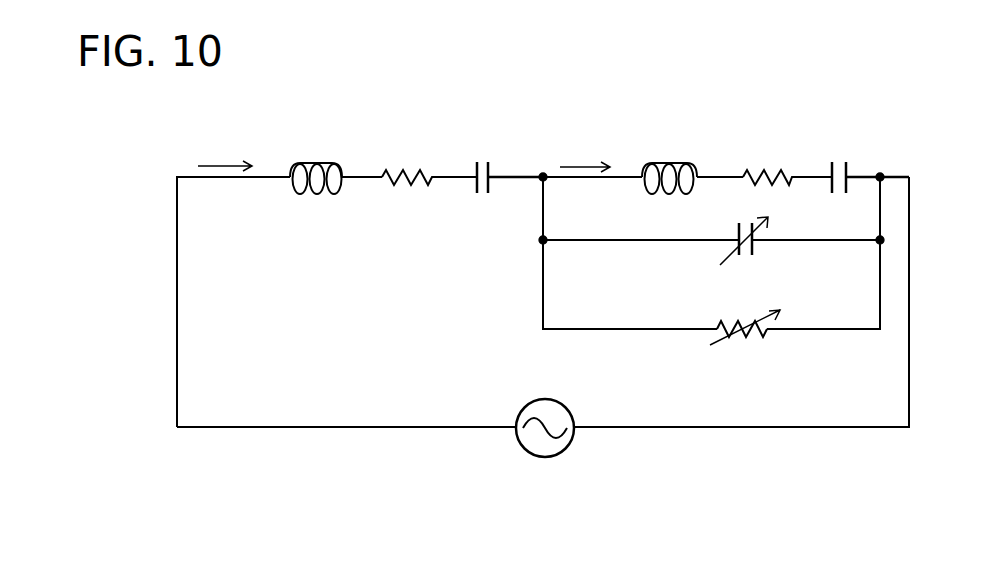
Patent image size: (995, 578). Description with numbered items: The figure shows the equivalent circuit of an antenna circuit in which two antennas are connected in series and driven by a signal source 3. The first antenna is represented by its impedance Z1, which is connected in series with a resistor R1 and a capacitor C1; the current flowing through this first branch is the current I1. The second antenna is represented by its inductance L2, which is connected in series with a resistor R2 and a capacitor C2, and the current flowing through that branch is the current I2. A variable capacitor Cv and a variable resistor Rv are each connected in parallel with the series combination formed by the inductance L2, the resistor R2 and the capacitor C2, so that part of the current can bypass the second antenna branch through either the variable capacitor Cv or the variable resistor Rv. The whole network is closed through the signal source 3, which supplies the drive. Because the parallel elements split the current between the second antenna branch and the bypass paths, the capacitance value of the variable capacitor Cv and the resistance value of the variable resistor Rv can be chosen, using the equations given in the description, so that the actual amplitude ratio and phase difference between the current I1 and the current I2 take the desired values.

The signal source 3 is at (545, 458).
The impedance of the antenna 1 Z1 is at (336, 194).
The resistor R1 is at (429, 163).
The capacitor C1 is at (507, 165).
The current I1 is at (225, 155).
The current I2 is at (585, 156).
The inductance of the antenna 2 L2 is at (692, 165).
The resistor R2 is at (787, 164).
The capacitor C2 is at (868, 164).
The variable capacitor Cv is at (744, 254).
The variable resistor Rv is at (745, 340).